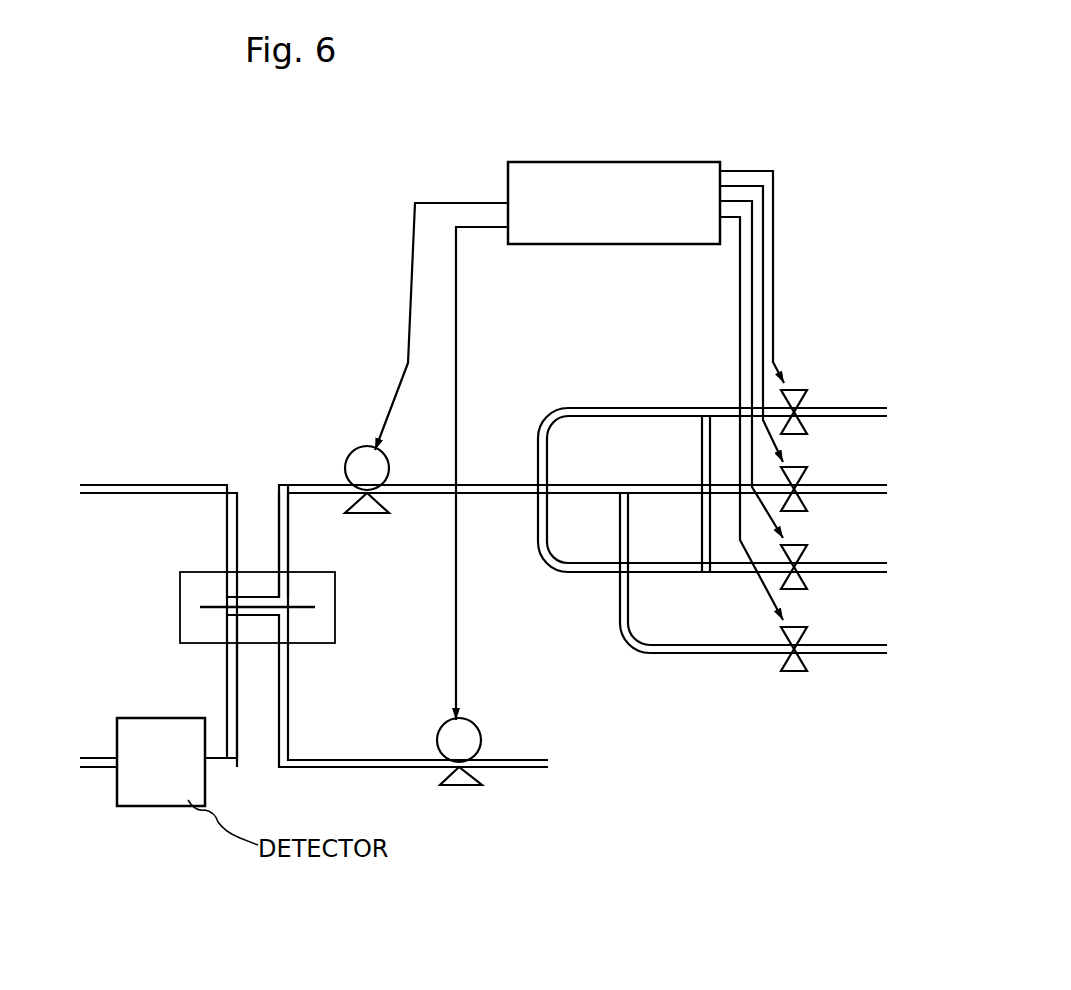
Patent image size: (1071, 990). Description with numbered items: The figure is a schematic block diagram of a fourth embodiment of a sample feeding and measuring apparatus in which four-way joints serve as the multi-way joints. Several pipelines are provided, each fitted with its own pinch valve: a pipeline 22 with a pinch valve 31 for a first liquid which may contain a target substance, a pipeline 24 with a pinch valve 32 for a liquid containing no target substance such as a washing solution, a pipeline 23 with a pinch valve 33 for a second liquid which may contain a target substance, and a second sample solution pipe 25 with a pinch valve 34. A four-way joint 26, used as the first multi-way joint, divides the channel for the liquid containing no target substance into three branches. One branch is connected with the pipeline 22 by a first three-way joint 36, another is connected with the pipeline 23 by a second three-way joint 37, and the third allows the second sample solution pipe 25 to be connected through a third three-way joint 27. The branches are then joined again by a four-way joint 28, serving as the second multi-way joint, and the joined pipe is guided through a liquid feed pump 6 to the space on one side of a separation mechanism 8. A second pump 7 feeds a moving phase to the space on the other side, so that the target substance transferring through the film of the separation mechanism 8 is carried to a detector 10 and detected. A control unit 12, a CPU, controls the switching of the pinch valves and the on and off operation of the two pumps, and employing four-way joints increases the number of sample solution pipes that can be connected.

The control unit 12 is at (645, 162).
The pump 6 is at (353, 448).
The pump 7 is at (476, 722).
The separation mechanism 8 is at (335, 612).
The detector 10 is at (167, 806).
The four-way joint 28 is at (530, 494).
The pipeline 22 is at (868, 407).
The pipeline 24 is at (868, 485).
The pipeline 23 is at (868, 563).
The second sample solution pipe 25 is at (868, 645).
The first three-way joint 36 is at (705, 408).
The second three-way joint 37 is at (705, 572).
The four-way joint 26 is at (702, 480).
The third three-way joint 27 is at (622, 483).
The pinch valve 31 is at (795, 389).
The pinch valve 32 is at (806, 466).
The pinch valve 33 is at (806, 544).
The pinch valve 34 is at (808, 626).